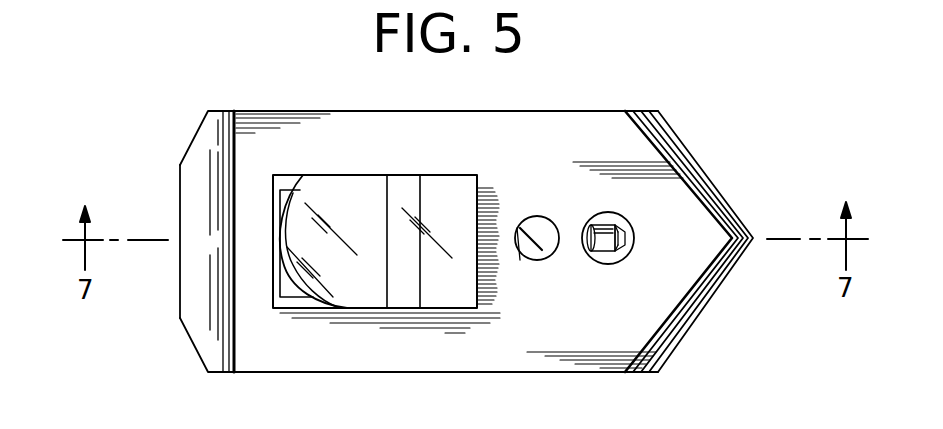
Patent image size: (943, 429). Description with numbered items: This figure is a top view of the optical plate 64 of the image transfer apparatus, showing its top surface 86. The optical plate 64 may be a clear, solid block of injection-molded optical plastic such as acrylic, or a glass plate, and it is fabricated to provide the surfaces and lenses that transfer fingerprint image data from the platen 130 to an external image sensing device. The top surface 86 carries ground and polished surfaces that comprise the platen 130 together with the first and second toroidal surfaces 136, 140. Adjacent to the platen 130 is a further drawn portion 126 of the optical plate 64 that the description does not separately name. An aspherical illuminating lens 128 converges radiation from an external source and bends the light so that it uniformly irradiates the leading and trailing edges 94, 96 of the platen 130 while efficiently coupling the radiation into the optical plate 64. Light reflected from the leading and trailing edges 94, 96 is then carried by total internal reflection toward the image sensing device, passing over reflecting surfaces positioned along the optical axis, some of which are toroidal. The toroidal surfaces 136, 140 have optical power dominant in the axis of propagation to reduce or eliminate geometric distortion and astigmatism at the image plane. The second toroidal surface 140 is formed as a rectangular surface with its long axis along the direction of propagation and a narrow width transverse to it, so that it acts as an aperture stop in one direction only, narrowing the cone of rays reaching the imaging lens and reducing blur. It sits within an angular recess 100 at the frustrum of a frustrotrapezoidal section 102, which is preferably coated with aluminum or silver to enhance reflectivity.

The optical plate 64 is at (612, 128).
The top surface 86 is at (318, 137).
The leading edge 94 is at (280, 247).
The trailing edge 96 is at (500, 284).
The angular recess 100 is at (603, 217).
The frustrotrapezoidal section 102 is at (592, 256).
The lens 126 is at (408, 195).
The aspherical illuminating lens 128 is at (316, 232).
The platen 130 is at (367, 293).
The first toroidal surface 136 is at (538, 228).
The second toroidal surface 140 is at (603, 245).